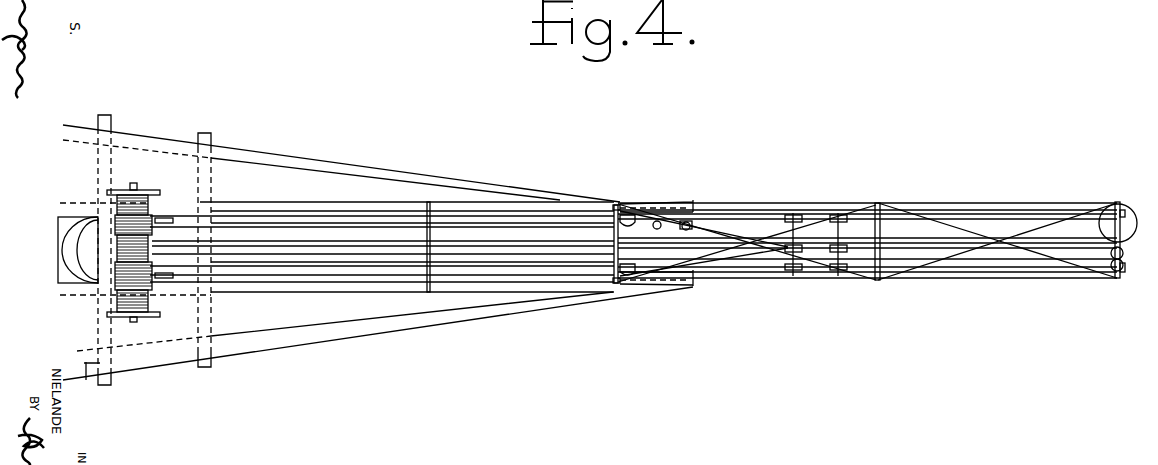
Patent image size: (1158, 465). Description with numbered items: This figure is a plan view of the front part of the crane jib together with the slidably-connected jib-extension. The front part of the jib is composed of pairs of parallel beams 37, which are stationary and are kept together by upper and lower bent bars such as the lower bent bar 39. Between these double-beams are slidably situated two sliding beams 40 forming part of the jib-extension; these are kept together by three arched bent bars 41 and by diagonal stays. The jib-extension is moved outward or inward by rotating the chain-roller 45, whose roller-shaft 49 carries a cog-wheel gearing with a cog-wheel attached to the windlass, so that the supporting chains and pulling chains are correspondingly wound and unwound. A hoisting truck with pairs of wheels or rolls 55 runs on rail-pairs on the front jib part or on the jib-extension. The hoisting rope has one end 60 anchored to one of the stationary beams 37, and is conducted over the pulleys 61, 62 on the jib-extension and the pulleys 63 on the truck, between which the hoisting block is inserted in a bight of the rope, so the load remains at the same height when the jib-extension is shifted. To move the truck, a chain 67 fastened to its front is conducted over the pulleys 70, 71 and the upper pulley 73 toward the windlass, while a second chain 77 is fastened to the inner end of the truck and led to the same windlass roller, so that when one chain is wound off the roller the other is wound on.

The parallel beams 37 is at (650, 220).
The lower bent bar 39 is at (430, 204).
The sliding beams 40 is at (1010, 213).
The arched bent bars 41 is at (617, 205).
The chain-roller 45 is at (166, 215).
The roller-shaft 49 is at (137, 179).
The wheels or rolls 55 is at (836, 217).
The end of hoisting rope 60 is at (657, 268).
The pulley 61 is at (635, 270).
The pulley 62 is at (1122, 273).
The pulleys on the truck 63 is at (788, 253).
The chain, rope or the like 67 is at (937, 240).
The pulley 70 is at (658, 221).
The pulley 71 is at (688, 221).
The upper pulley 73 is at (1103, 228).
The second chain, rope or the like 77 is at (530, 240).